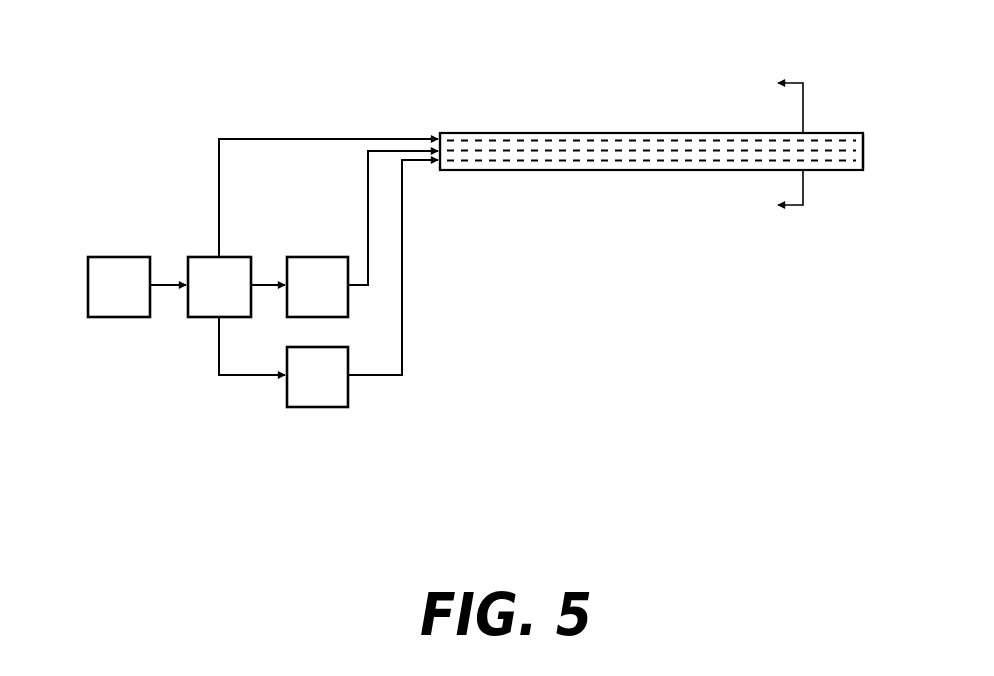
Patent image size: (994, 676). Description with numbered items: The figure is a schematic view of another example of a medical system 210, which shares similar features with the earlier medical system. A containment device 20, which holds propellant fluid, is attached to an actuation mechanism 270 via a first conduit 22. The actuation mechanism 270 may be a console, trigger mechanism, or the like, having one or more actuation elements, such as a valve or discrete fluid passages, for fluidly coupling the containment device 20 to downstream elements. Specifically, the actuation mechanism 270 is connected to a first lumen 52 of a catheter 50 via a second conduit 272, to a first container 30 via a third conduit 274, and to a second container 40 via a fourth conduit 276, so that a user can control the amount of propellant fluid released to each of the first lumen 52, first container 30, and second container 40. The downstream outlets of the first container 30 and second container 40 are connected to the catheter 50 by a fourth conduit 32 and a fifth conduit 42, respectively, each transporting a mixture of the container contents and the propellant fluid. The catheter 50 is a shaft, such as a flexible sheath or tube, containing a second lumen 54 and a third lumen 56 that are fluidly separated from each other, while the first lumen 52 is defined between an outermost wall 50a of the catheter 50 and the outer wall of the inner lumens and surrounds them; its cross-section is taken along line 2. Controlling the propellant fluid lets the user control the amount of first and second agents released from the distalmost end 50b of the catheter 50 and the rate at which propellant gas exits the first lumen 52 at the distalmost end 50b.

The medical system 210 is at (423, 46).
The containment device 20 is at (129, 301).
The first conduit 22 is at (168, 287).
The actuation mechanism 270 is at (235, 301).
The second conduit 272 is at (283, 138).
The third conduit 274 is at (270, 283).
The fourth conduit 276 is at (243, 376).
The first container 30 is at (327, 301).
The fourth conduit 32 is at (367, 171).
The second container 40 is at (327, 391).
The fifth conduit 42 is at (404, 283).
The catheter 50 is at (692, 146).
The outermost wall of catheter 50a is at (436, 176).
The distalmost end of catheter 50b is at (876, 166).
The first lumen 52 is at (642, 171).
The second lumen 54 is at (860, 143).
The third lumen 56 is at (822, 162).
The section line 2- 2 is at (790, 146).